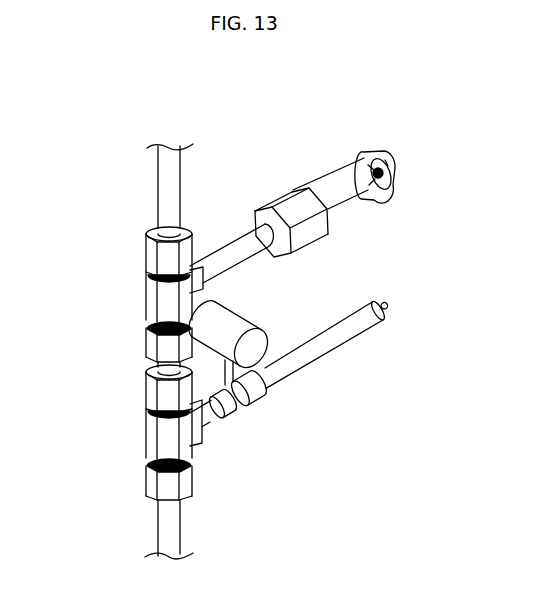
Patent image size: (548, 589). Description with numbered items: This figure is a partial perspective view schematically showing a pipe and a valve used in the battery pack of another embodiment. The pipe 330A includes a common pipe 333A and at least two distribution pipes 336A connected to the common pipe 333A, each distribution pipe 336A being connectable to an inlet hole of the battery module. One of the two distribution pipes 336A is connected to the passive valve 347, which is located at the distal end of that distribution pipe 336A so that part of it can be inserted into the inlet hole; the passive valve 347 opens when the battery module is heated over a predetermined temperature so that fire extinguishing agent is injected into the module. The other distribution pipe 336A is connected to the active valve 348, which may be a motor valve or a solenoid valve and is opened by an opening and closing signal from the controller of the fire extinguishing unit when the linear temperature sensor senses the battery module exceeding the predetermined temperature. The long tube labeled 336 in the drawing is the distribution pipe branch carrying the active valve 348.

The pipe 330A is at (237, 113).
The common pipe 333A is at (163, 178).
The distribution pipe 336A is at (200, 253).
The passive valve 347 is at (327, 177).
The active valve 348 is at (258, 320).
The pipe 336 is at (267, 398).